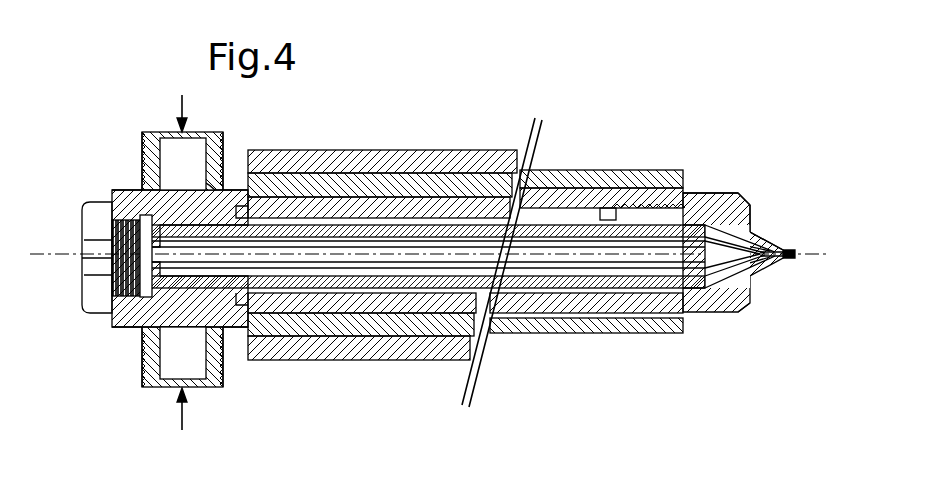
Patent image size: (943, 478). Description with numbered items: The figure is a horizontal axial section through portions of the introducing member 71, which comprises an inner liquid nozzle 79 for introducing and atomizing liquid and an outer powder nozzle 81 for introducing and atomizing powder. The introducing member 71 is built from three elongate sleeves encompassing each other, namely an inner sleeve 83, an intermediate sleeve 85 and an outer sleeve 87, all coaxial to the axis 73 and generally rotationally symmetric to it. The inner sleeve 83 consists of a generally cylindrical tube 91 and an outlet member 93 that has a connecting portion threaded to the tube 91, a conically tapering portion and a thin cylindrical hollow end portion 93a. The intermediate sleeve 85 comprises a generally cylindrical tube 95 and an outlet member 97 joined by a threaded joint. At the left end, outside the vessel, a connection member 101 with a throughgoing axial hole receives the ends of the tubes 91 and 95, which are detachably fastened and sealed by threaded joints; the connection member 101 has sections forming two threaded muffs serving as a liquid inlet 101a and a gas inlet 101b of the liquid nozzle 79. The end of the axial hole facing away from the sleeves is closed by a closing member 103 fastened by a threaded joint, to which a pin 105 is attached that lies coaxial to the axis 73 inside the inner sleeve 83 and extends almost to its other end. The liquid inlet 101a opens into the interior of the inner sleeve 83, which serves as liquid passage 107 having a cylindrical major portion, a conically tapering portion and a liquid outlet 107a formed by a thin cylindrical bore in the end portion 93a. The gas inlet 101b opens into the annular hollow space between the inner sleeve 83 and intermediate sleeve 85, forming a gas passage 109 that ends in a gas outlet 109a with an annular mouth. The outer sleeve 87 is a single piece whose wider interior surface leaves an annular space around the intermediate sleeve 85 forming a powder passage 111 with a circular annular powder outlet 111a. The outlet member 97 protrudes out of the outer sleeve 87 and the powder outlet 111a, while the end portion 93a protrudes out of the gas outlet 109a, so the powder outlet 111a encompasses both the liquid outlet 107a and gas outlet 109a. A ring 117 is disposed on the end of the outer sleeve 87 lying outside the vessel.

The introducing member 71 is at (300, 150).
The axis 73 is at (82, 258).
The liquid nozzle 79 is at (792, 250).
The powder nozzle 81 is at (655, 172).
The inner sleeve 83 is at (335, 225).
The intermediate sleeve 85 is at (415, 241).
The outer sleeve 87 is at (500, 247).
The tube 91 is at (508, 345).
The outlet member 93 is at (707, 312).
The end portion 93a is at (775, 276).
The tube 95 is at (570, 333).
The outlet member 97 is at (744, 312).
The connection member 101 is at (135, 190).
The liquid inlet 101a is at (160, 387).
The gas inlet 101b is at (158, 132).
The closing member 103 is at (112, 310).
The pin 105 is at (345, 360).
The liquid passage 107 is at (545, 175).
The liquid outlet 107a is at (780, 258).
The gas passage 109 is at (600, 195).
The gas outlet 109a is at (752, 215).
The powder passage 111 is at (620, 208).
The powder outlet 111a is at (705, 193).
The ring 117 is at (412, 360).